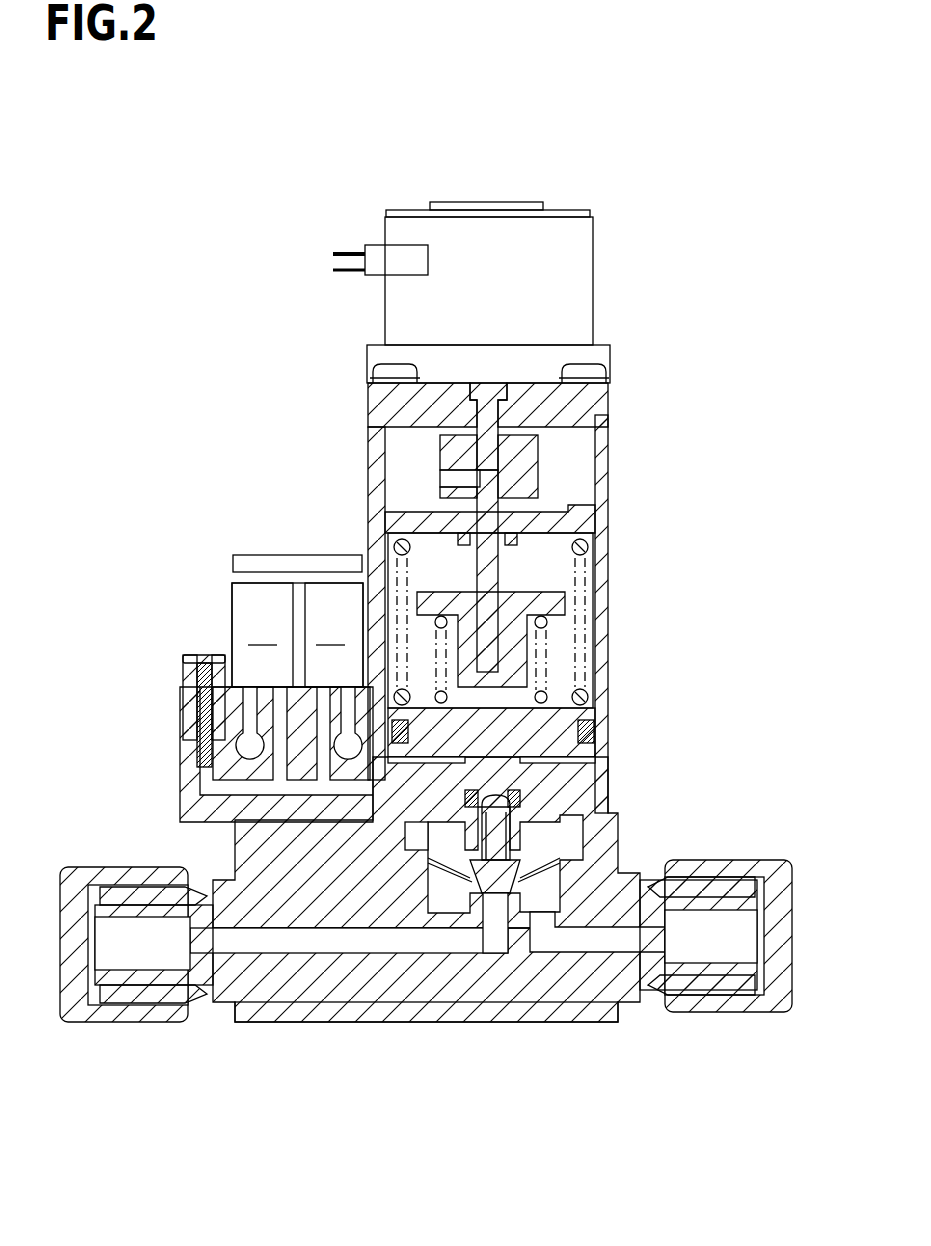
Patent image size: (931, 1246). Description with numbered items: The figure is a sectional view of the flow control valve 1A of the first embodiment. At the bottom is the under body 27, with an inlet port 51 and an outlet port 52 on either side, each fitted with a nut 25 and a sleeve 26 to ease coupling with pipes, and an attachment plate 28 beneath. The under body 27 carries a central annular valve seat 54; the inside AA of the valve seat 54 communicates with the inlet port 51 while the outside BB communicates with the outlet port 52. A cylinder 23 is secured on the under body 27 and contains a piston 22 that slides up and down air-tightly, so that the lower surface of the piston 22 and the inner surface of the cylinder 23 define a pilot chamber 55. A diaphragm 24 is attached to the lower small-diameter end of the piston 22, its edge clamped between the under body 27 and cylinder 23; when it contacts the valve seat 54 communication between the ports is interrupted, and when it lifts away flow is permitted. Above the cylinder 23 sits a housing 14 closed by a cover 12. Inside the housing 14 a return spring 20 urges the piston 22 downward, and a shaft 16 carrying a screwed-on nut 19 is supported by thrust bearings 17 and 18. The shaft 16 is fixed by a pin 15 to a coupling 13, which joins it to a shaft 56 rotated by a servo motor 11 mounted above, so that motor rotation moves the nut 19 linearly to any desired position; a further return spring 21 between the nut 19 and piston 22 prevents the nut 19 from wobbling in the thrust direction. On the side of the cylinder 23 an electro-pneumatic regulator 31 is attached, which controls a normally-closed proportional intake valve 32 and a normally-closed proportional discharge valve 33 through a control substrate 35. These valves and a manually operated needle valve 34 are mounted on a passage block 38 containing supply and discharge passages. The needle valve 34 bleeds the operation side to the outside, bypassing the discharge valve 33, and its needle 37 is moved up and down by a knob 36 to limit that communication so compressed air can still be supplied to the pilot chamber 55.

The flow control valve 1A is at (598, 205).
The servo motor 11 is at (583, 252).
The cover 12 is at (597, 400).
The coupling 13 is at (525, 470).
The housing 14 is at (602, 482).
The pin 15 is at (445, 478).
The shaft 16 is at (502, 573).
The thrust bearing 17 is at (535, 503).
The thrust bearing 18 is at (573, 557).
The nut 19 is at (547, 602).
The return spring 20 is at (592, 697).
The return spring 21 is at (545, 698).
The piston 22 is at (590, 740).
The cylinder 23 is at (590, 787).
The diaphragm 24 is at (548, 840).
The nut 25 is at (77, 882).
The sleeve 26 is at (80, 965).
The under body 27 is at (625, 985).
The attachment plate 28 is at (505, 1012).
The electro-pneumatic regulator 31 is at (218, 637).
The proportional intake valve 32 is at (337, 681).
The proportional discharge valve 33 is at (253, 681).
The needle valve 34 is at (180, 680).
The control substrate 35 is at (240, 565).
The knob 36 is at (188, 660).
The needle 37 is at (200, 717).
The passage block 38 is at (190, 795).
The inlet port 51 is at (112, 953).
The outlet port 52 is at (745, 950).
The valve seat 54 is at (470, 895).
The pilot chamber 55 is at (565, 762).
The shaft 56 is at (487, 388).
The inside of the valve seat AA is at (345, 940).
The outside of the valve seat BB is at (590, 930).